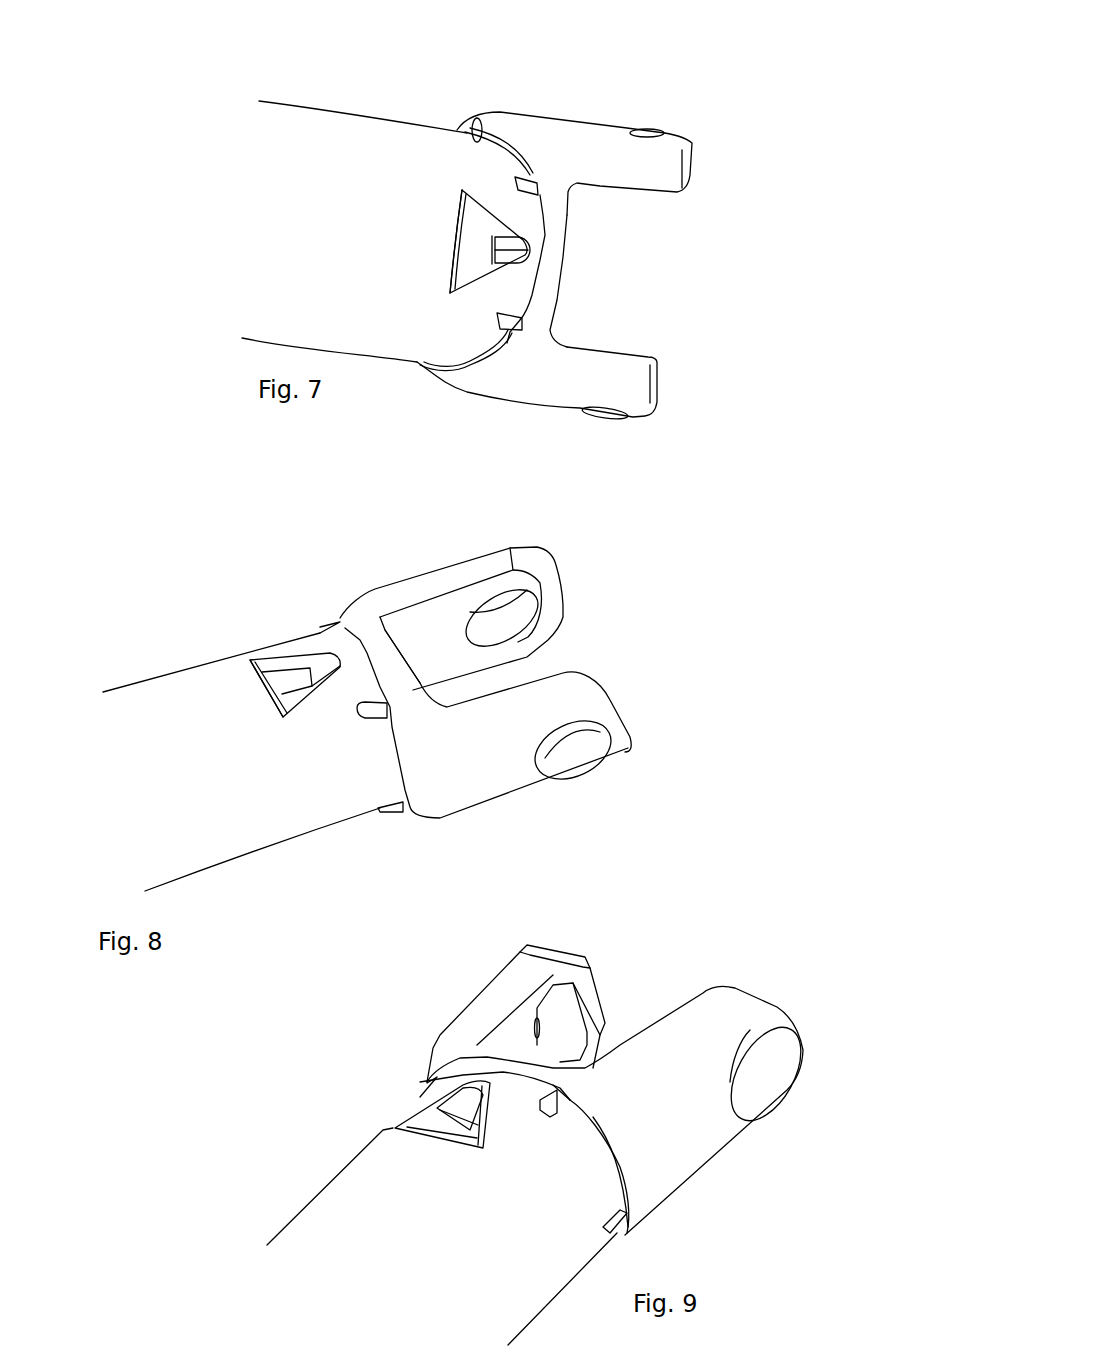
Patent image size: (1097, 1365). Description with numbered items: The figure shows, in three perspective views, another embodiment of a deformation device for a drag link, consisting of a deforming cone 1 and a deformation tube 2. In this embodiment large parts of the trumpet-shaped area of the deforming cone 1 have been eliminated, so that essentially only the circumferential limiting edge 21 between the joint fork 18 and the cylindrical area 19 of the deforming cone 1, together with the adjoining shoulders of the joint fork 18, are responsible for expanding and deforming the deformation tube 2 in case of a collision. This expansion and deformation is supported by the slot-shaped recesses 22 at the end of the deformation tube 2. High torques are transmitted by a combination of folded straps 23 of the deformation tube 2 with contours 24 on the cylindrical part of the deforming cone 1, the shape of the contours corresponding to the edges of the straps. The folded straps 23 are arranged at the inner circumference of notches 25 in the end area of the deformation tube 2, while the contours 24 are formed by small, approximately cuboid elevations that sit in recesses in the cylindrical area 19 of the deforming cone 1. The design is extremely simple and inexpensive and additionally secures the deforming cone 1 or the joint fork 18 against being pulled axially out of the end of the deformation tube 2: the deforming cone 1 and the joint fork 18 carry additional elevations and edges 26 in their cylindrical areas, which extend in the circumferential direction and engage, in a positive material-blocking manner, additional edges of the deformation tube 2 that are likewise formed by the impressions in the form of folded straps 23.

In FIG. 7, the deforming cone 1 is at (756, 458).
In FIG. 8, the deforming cone 1 is at (680, 733).
In FIG. 9, the deforming cone 1 is at (727, 908).
In FIG. 7, the deformation tube 2 is at (352, 231).
In FIG. 8, the deformation tube 2 is at (138, 636).
In FIG. 9, the deformation tube 2 is at (256, 1195).
In FIG. 7, the joint fork 18 is at (651, 173).
In FIG. 8, the joint fork 18 is at (558, 702).
In FIG. 9, the joint fork 18 is at (719, 1010).
In FIG. 7, the cylindrical area 19 is at (398, 92).
In FIG. 8, the cylindrical area 19 is at (343, 873).
In FIG. 7, the circumferential limiting edge 21 is at (536, 183).
In FIG. 8, the circumferential limiting edge 21 is at (389, 706).
In FIG. 9, the circumferential limiting edge 21 is at (567, 1094).
In FIG. 7, the slot-shaped recesses 22 is at (502, 178).
In FIG. 8, the slot-shaped recesses 22 is at (345, 727).
In FIG. 9, the slot-shaped recesses 22 is at (598, 1204).
In FIG. 7, the folded straps 23 is at (484, 221).
In FIG. 8, the folded straps 23 is at (292, 700).
In FIG. 9, the folded straps 23 is at (478, 1127).
In FIG. 7, the contours 24 is at (476, 239).
In FIG. 8, the contours 24 is at (283, 684).
In FIG. 9, the contours 24 is at (451, 1121).
In FIG. 7, the notches 25 is at (478, 182).
In FIG. 8, the notches 25 is at (252, 633).
In FIG. 9, the notches 25 is at (450, 1160).
In FIG. 7, the elevations and edges 26 is at (448, 253).
In FIG. 8, the elevations and edges 26 is at (258, 673).
In FIG. 9, the elevations and edges 26 is at (471, 1158).